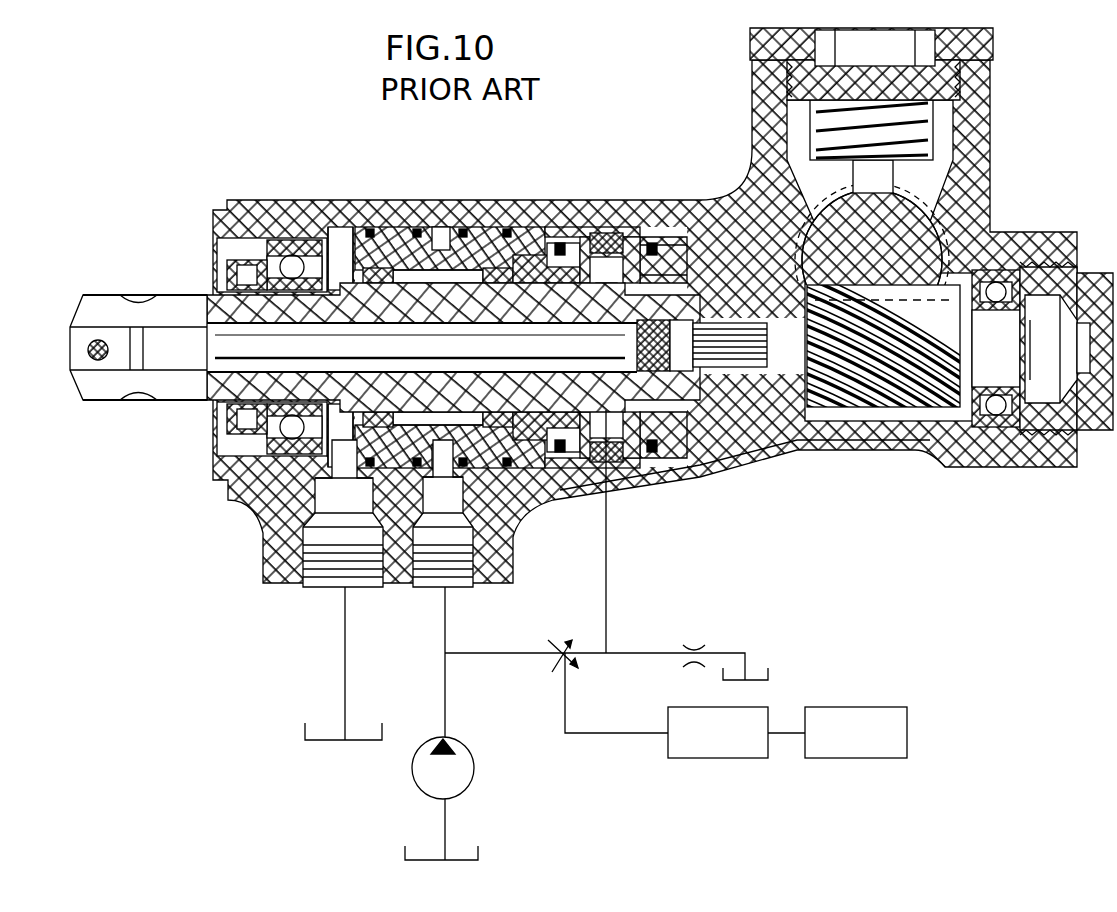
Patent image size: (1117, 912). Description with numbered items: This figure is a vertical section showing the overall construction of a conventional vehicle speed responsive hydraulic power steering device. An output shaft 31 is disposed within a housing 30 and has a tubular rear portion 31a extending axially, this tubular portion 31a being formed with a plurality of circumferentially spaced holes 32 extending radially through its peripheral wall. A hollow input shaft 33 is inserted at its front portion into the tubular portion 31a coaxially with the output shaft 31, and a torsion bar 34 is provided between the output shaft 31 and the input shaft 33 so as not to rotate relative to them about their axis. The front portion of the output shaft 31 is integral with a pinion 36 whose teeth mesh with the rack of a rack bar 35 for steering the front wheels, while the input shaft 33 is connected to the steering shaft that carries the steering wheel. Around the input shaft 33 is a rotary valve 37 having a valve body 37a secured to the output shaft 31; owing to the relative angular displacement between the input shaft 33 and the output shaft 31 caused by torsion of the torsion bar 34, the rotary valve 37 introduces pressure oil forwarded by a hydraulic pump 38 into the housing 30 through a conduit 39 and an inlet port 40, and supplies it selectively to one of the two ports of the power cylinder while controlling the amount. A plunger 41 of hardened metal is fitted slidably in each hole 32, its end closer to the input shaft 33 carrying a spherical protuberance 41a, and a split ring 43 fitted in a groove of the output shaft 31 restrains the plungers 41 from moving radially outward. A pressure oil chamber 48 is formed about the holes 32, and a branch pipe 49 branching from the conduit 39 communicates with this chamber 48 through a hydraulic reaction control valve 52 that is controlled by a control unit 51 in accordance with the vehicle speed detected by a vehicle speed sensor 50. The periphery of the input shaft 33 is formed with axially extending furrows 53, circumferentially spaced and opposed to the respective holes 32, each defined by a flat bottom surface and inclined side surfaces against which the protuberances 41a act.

The housing 30 is at (283, 200).
The output shaft 31 is at (805, 450).
The tubular rear portion 31a is at (530, 225).
The holes 32 is at (588, 215).
The input shaft 33 is at (228, 389).
The torsion bar 34 is at (173, 352).
The rack bar 35 is at (922, 232).
The pinion 36 is at (890, 410).
The rotary valve 37 is at (338, 210).
The valve body 37a is at (365, 212).
The hydraulic pump 38 is at (468, 766).
The conduit 39 is at (448, 688).
The inlet port 40 is at (440, 568).
The plunger 41 is at (648, 215).
The spherical protuberance 41a is at (544, 215).
The split ring 43 is at (610, 210).
The pressure oil chamber 48 is at (628, 215).
The branch pipe 49 is at (607, 606).
The vehicle speed sensor 50 is at (866, 758).
The control unit 51 is at (722, 758).
The hydraulic reaction control valve 52 is at (560, 645).
The furrows 53 is at (672, 215).